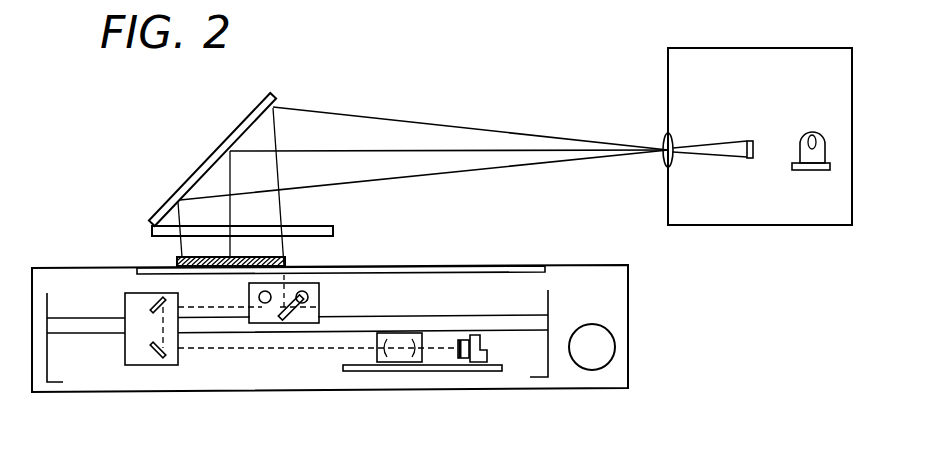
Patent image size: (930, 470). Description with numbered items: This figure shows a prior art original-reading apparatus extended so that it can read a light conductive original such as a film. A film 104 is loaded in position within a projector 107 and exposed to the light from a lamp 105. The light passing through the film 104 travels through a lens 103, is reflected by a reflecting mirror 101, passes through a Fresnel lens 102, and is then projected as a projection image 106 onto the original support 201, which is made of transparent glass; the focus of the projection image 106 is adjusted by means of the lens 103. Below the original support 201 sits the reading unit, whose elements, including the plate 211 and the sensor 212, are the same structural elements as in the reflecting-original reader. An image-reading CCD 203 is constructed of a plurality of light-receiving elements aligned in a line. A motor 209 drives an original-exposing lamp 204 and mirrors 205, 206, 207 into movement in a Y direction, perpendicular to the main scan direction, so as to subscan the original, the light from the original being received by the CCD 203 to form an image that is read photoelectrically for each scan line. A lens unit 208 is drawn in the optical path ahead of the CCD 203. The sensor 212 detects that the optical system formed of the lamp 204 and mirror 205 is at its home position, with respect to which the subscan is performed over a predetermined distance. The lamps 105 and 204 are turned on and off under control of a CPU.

The reflecting mirror 101 is at (260, 107).
The Fresnel lens 102 is at (330, 226).
The lens 103 is at (663, 156).
The film 104 is at (749, 158).
The lamp 105 is at (815, 171).
The projection image 106 is at (198, 257).
The projector 107 is at (718, 47).
The original support 201 is at (540, 269).
The image-reading CCD 203 is at (461, 362).
The original-exposing lamp 204 is at (302, 303).
The mirror 205 is at (290, 323).
The mirror 206 is at (148, 306).
The mirror 207 is at (149, 352).
The lens unit 208 is at (400, 365).
The motor 209 is at (591, 370).
The plate 211 is at (147, 265).
The sensor 212 is at (136, 281).